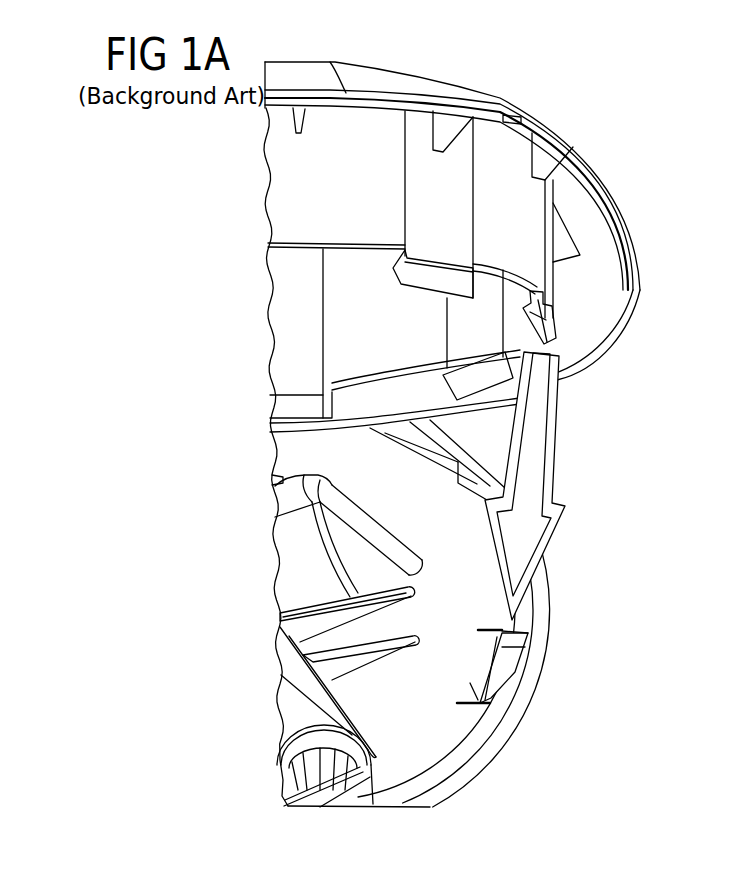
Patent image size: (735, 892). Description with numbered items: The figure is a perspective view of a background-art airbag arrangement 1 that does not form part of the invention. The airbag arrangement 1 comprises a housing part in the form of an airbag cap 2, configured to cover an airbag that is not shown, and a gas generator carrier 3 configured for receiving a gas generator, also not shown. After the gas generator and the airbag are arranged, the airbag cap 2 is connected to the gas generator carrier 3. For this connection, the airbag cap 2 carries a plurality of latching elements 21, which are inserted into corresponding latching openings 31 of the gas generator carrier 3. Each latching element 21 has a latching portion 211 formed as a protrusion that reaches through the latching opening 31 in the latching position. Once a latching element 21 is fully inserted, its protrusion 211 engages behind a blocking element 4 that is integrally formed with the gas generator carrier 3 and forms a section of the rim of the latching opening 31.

The airbag arrangement 1 is at (650, 150).
The airbag cap 2 is at (636, 213).
The latching element 21 is at (437, 279).
The latching portion 211 is at (537, 313).
The gas generator carrier 3 is at (568, 612).
The latching opening 31 is at (505, 675).
The blocking element 4 is at (470, 683).